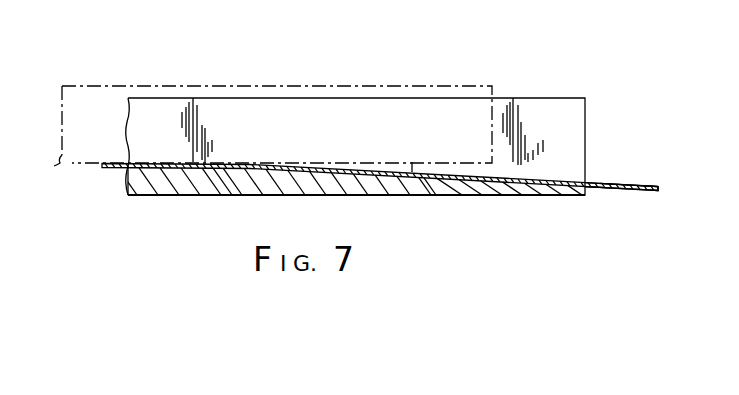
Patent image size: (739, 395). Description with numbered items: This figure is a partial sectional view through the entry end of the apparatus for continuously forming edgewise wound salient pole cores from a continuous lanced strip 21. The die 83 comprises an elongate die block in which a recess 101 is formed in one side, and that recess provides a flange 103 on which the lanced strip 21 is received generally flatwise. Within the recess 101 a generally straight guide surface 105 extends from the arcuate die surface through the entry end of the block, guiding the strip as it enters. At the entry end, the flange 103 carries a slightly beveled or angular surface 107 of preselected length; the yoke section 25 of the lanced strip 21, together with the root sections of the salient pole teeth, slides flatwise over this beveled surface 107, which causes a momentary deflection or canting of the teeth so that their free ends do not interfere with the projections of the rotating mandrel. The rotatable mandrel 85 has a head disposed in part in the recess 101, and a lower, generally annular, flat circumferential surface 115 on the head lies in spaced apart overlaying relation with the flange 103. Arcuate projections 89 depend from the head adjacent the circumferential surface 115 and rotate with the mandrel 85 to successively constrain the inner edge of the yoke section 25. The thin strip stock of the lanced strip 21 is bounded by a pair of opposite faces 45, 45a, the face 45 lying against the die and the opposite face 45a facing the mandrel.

The rotatable mandrel 85 is at (203, 73).
The die 83 is at (625, 73).
The recess 101 is at (520, 116).
The arcuate projections 89 is at (395, 167).
The circumferential surface 115 is at (88, 165).
The flange 103 is at (126, 182).
The guide surface 105 is at (243, 194).
The beveled surface 107 is at (437, 195).
The yoke section 25 is at (597, 190).
The face 45 is at (625, 192).
The opposite face 45a is at (633, 185).
The lanced strip 21 is at (661, 196).